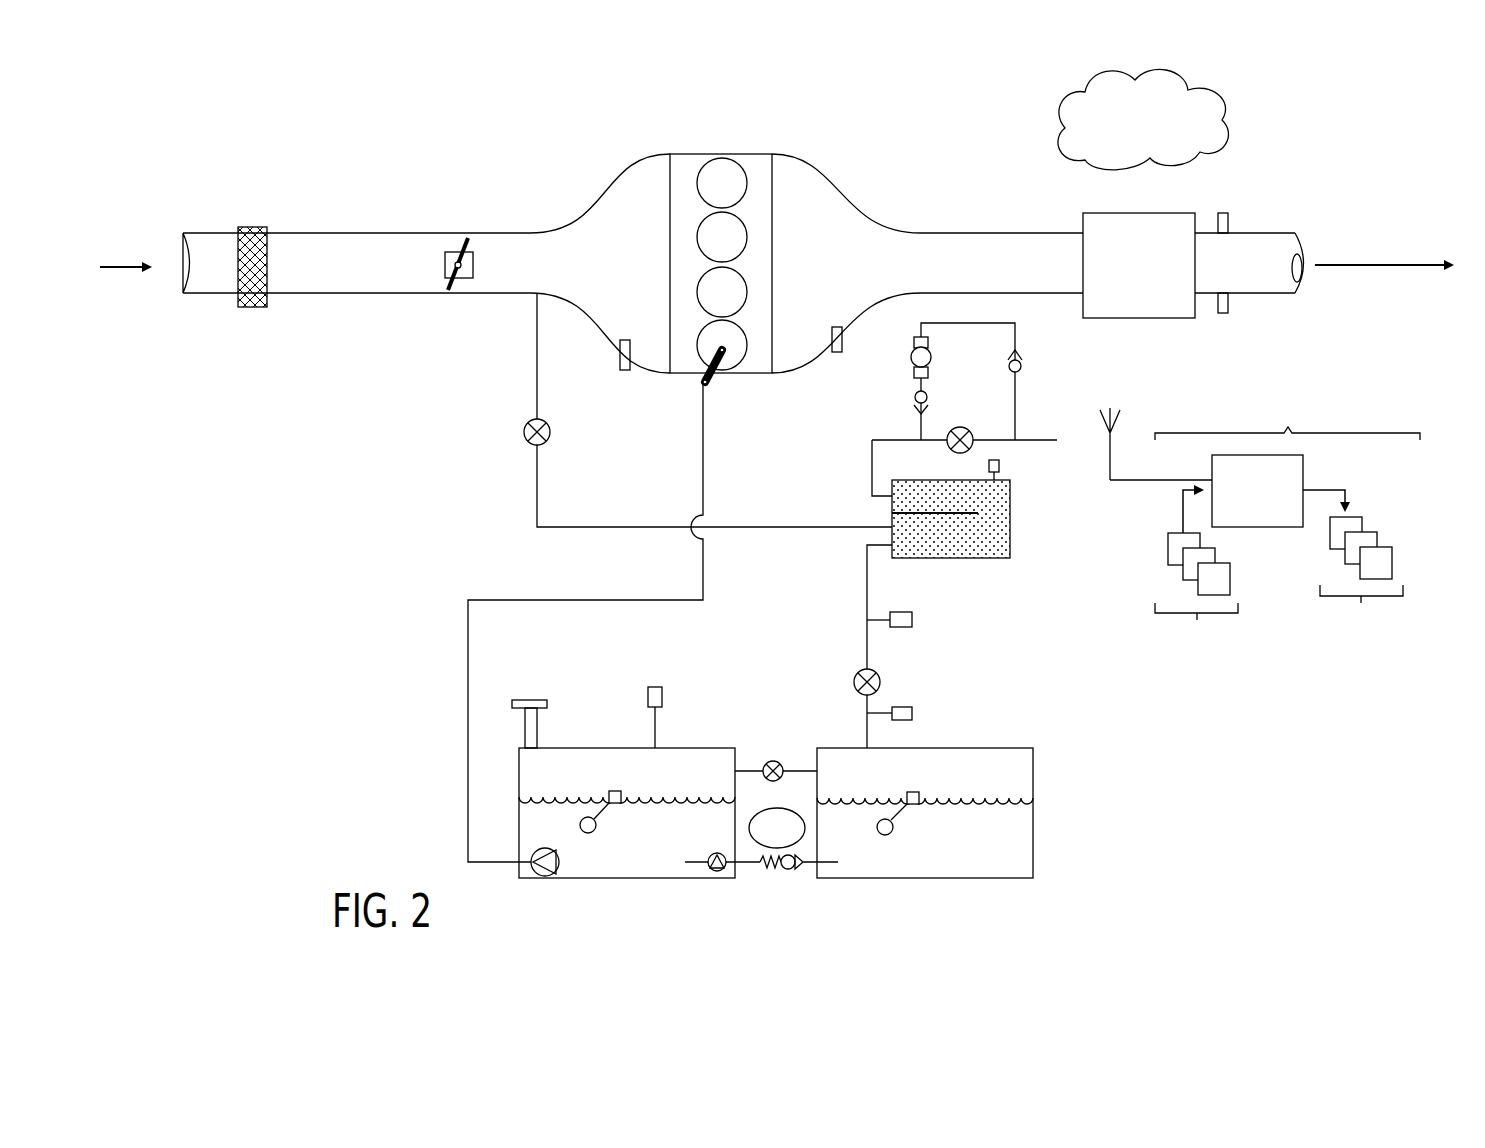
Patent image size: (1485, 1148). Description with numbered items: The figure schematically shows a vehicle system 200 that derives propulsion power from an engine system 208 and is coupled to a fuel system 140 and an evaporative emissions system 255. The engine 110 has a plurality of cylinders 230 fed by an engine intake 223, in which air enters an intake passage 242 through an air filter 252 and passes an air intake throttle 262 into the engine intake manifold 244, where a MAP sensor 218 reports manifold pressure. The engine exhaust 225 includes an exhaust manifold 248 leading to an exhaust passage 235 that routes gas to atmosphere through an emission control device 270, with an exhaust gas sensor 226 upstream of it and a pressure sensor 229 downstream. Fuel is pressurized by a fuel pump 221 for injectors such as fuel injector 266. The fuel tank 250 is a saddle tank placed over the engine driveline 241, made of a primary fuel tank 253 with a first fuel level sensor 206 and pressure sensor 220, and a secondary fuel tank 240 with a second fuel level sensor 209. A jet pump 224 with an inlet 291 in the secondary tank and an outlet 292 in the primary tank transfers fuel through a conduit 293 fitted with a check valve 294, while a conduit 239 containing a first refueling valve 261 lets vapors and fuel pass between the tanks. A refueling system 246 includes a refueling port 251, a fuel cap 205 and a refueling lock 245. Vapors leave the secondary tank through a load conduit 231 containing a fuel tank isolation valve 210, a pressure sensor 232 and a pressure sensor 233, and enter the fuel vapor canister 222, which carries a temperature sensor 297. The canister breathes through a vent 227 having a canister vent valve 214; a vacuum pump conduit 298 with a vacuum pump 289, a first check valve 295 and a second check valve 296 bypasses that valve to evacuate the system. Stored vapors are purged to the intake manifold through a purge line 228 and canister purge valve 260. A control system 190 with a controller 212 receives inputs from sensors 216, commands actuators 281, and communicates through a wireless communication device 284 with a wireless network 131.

The vehicle system 200 is at (200, 128).
The intake passage 242 is at (212, 296).
The air filter 252 is at (255, 227).
The air intake throttle 262 is at (473, 268).
The engine intake 223 is at (592, 182).
The engine intake manifold 244 is at (626, 264).
The engine 110 is at (772, 245).
The cylinders 230 is at (745, 178).
The fuel injector 266 is at (712, 385).
The exhaust manifold 248 is at (844, 264).
The engine exhaust 225 is at (889, 188).
The MAP sensor 218 is at (620, 352).
The exhaust gas sensor 226 is at (842, 335).
The exhaust passage 235 is at (1278, 233).
The emission control device 270 is at (1125, 213).
The pressure sensor 229 is at (1224, 213).
The outlet 292 is at (1222, 313).
The engine system 208 is at (1336, 128).
The wireless network 131 is at (1143, 119).
The purge line 228 is at (537, 522).
The canister purge valve 260 is at (547, 436).
The fuel vapor canister 222 is at (1010, 560).
The temperature sensor 297 is at (1000, 468).
The vent 227 is at (1050, 446).
The canister vent valve 214 is at (958, 428).
The vacuum pump conduit 298 is at (998, 323).
The vacuum pump 289 is at (930, 360).
The first check valve 295 is at (928, 395).
The second check valve 296 is at (1021, 368).
The evaporative emissions system 255 is at (1003, 603).
The load conduit 231 is at (860, 716).
The fuel tank isolation valve 210 is at (856, 677).
The pressure sensor 232 is at (905, 628).
The pressure sensor 233 is at (905, 721).
The primary fuel tank 253 is at (695, 748).
The first fuel level sensor 206 is at (618, 793).
The fuel pump 221 is at (558, 862).
The fuel cap 205 is at (547, 703).
The refueling port 251 is at (537, 728).
The refueling lock 245 is at (525, 712).
The refueling system 246 is at (521, 684).
The fuel tank 250 is at (665, 652).
The pressure sensor 220 is at (662, 698).
The conduit 239 is at (740, 778).
The first refueling valve 261 is at (768, 762).
The engine driveline 241 is at (777, 828).
The jet pump 224 is at (710, 872).
The conduit 293 is at (760, 868).
The check valve 294 is at (772, 886).
The inlet 291 is at (835, 862).
The secondary fuel tank 240 is at (1027, 748).
The second fuel level sensor 209 is at (916, 793).
The fuel system 140 is at (886, 910).
The control system 190 is at (1287, 410).
The controller 212 is at (1257, 491).
The wireless communication device 284 is at (1118, 462).
The sensors 216 is at (1196, 576).
The actuators 281 is at (1355, 567).